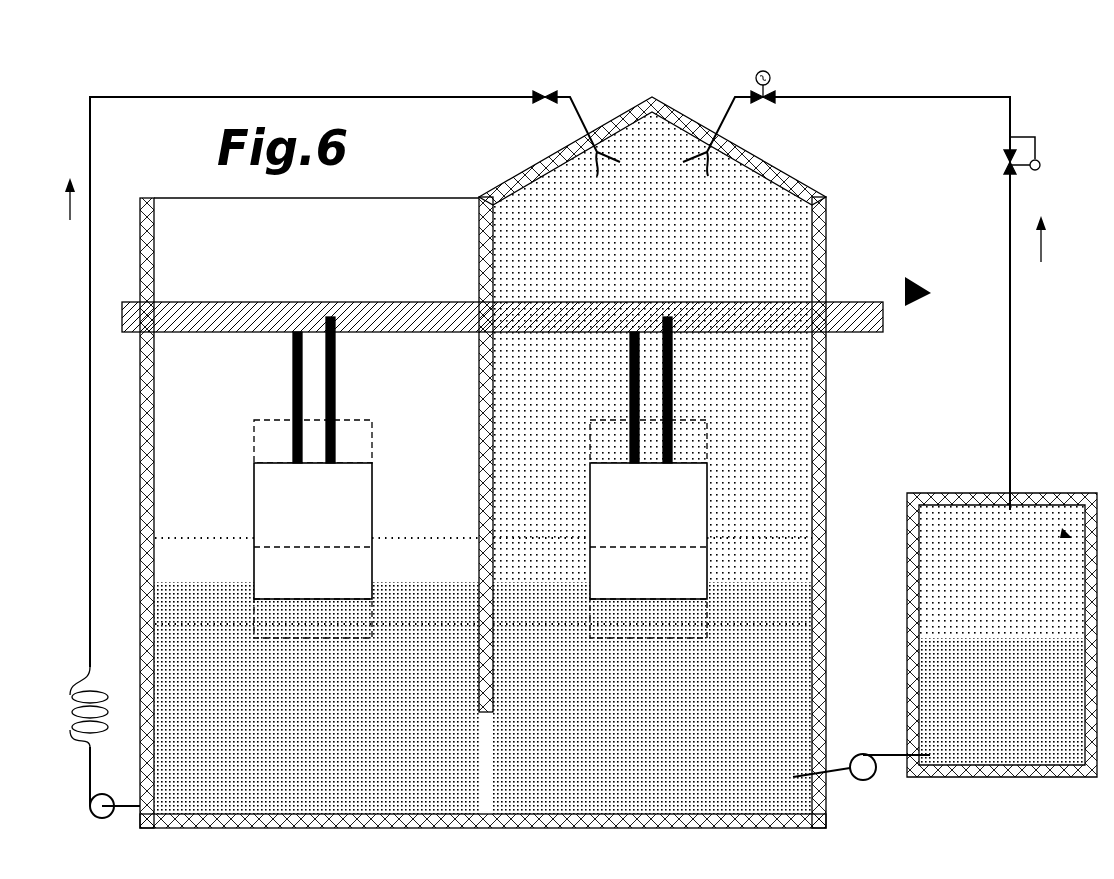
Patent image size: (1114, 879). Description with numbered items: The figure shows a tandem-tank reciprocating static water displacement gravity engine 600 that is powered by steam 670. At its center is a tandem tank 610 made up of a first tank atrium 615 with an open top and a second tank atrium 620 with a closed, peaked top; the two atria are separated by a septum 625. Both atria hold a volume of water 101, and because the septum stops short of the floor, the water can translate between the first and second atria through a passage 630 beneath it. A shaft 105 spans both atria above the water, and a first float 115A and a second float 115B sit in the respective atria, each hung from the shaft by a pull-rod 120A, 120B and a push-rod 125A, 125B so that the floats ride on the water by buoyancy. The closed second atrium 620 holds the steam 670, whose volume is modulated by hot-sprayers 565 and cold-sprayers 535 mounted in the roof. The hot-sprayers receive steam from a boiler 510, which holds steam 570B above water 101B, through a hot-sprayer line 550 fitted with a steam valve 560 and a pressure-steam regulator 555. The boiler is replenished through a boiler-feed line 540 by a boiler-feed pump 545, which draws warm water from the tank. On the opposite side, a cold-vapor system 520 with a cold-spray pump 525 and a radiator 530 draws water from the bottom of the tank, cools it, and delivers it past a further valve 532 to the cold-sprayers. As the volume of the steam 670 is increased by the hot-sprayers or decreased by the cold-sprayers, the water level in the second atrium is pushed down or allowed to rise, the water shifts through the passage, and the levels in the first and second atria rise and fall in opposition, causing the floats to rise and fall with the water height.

The water 101 is at (392, 803).
The water 101B is at (1064, 762).
The shaft 105 is at (918, 300).
The first float 115A is at (252, 474).
The second float 115B is at (588, 474).
The first rod 120A is at (292, 386).
The first rod of second housing 120B is at (629, 380).
The second rod 125A is at (336, 380).
The second rod of second housing 125B is at (673, 372).
The boiler 510 is at (906, 508).
The cold-vapor system 520 is at (136, 84).
The cold-spray pump 525 is at (116, 816).
The radiator 530 is at (96, 676).
The valve 532 is at (542, 94).
The cold-sprayers 535 is at (580, 104).
The boiler-feed line 540 is at (864, 738).
The boiler-feed pump 545 is at (868, 782).
The hot-sprayer line 550 is at (1040, 98).
The pressure-steam regulator 555 is at (1040, 170).
The steam valve 560 is at (790, 100).
The hot-sprayers 565 is at (718, 122).
The steam 570B is at (1068, 532).
The tandem-tank reciprocating static water displacement gravity engine 600 is at (864, 196).
The tandem tank 610 is at (828, 588).
The first tank atrium 615 is at (320, 269).
The second tank atrium 620 is at (590, 272).
The septum 625 is at (495, 684).
The passage 630 is at (470, 773).
The steam 670 is at (808, 276).